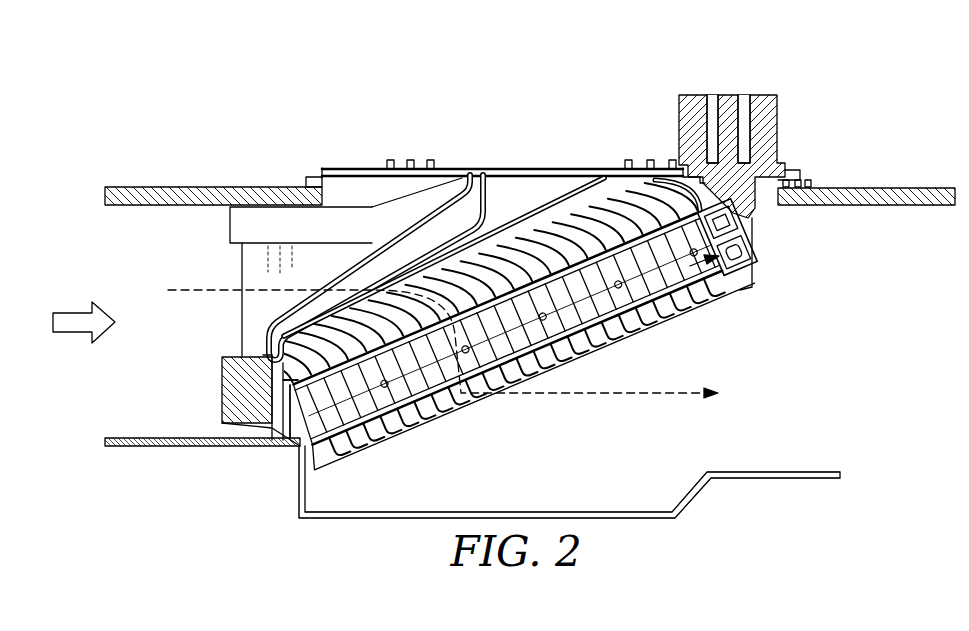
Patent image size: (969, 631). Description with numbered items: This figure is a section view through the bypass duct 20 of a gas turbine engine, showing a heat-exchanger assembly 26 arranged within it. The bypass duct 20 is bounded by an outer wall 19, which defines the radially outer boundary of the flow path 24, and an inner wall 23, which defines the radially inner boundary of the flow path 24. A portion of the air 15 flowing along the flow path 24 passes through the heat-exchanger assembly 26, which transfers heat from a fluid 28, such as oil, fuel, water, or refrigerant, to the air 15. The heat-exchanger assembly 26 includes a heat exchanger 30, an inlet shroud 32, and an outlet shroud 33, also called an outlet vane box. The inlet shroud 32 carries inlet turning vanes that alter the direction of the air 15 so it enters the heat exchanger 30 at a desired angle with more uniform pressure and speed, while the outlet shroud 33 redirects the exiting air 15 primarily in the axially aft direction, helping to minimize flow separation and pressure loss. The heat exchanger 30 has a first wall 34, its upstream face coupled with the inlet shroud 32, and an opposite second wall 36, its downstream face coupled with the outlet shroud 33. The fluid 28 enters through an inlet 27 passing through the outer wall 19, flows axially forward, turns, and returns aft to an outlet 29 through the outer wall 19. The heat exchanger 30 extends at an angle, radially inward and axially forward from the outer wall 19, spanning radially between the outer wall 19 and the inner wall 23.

The air 15 is at (203, 290).
The outer wall 19 is at (142, 186).
The bypass duct 20 is at (498, 277).
The inner wall 23 is at (203, 447).
The flow path 24 is at (90, 237).
The heat-exchanger assembly 26 is at (541, 277).
The inlet 27 is at (712, 93).
The fluid 28 is at (740, 265).
The outlet 29 is at (747, 93).
The heat exchanger 30 is at (541, 316).
The inlet shroud 32 is at (560, 197).
The outlet shroud 33 is at (643, 337).
The first wall 34 is at (325, 380).
The second wall 36 is at (358, 428).